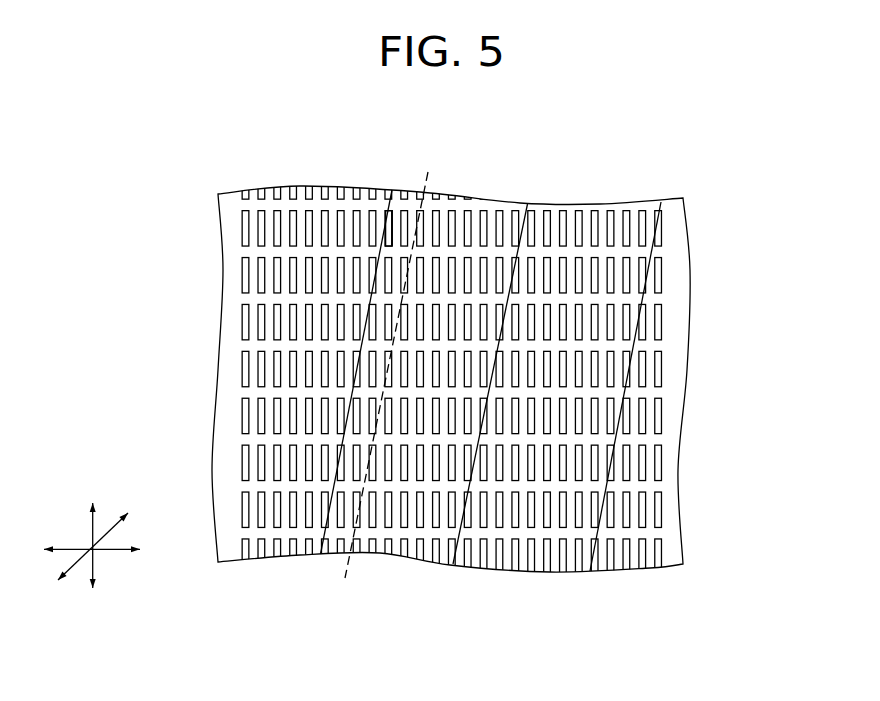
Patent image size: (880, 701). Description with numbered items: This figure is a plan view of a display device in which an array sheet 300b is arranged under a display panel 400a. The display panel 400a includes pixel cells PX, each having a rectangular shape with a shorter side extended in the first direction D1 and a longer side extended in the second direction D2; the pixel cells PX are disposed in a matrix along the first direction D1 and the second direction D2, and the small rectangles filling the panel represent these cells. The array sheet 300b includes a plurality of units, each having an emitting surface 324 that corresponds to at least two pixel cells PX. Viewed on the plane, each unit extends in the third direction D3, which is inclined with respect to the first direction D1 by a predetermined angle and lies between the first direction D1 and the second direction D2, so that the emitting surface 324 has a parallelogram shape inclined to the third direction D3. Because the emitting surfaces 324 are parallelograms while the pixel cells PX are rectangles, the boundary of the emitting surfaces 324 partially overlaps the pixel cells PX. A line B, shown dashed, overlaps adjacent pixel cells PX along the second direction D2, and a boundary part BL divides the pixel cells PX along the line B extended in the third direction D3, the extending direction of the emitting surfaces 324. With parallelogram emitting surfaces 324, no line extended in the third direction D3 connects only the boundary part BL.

The display panel 400a is at (666, 190).
The pixel cells PX is at (384, 216).
The boundary part BL is at (554, 208).
The line B is at (436, 181).
The emitting surface 324 is at (377, 547).
The array sheet 300b is at (542, 622).
The first direction D1 is at (106, 551).
The second direction D2 is at (94, 530).
The third direction D3 is at (106, 534).